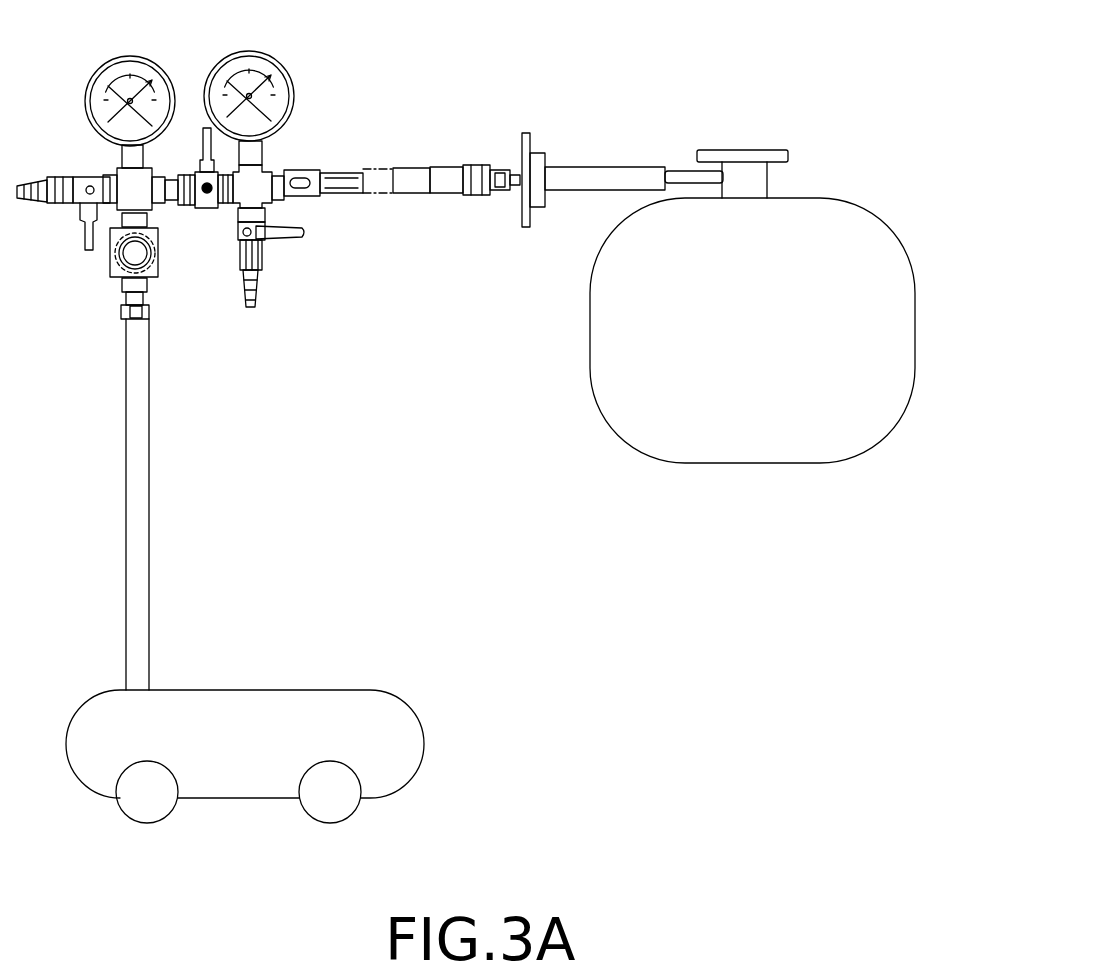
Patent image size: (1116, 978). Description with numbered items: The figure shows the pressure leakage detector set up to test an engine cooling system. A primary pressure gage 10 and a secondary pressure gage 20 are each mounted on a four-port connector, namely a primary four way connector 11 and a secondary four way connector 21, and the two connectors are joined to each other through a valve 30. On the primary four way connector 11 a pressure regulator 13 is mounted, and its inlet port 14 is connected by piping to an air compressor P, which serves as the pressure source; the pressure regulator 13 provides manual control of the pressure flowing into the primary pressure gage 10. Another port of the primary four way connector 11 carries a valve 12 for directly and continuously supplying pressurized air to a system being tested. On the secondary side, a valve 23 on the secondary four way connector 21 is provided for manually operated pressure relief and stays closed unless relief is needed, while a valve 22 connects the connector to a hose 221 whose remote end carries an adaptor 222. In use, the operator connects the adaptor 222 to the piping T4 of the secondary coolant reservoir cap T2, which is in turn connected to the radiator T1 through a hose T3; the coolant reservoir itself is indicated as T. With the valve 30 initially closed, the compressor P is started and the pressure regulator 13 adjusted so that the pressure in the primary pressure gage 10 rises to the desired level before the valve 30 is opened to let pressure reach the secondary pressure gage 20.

The primary pressure gage 10 is at (127, 58).
The secondary pressure gage 20 is at (250, 52).
The primary four way connector 11 is at (143, 198).
The valve 12 is at (72, 176).
The pressure regulator 13 is at (137, 253).
The inlet port 14 is at (145, 293).
The valve 30 is at (204, 144).
The secondary four way connector 21 is at (258, 180).
The valve 22 is at (313, 172).
The valve 23 is at (279, 241).
The hose 221 is at (394, 176).
The adaptor 222 is at (480, 178).
The fuel tank T is at (637, 436).
The radiator T1 is at (768, 158).
The secondary coolant reservoir cap T2 is at (533, 210).
The hose T3 is at (598, 180).
The piping T4 is at (480, 178).
The air compressor P is at (306, 693).